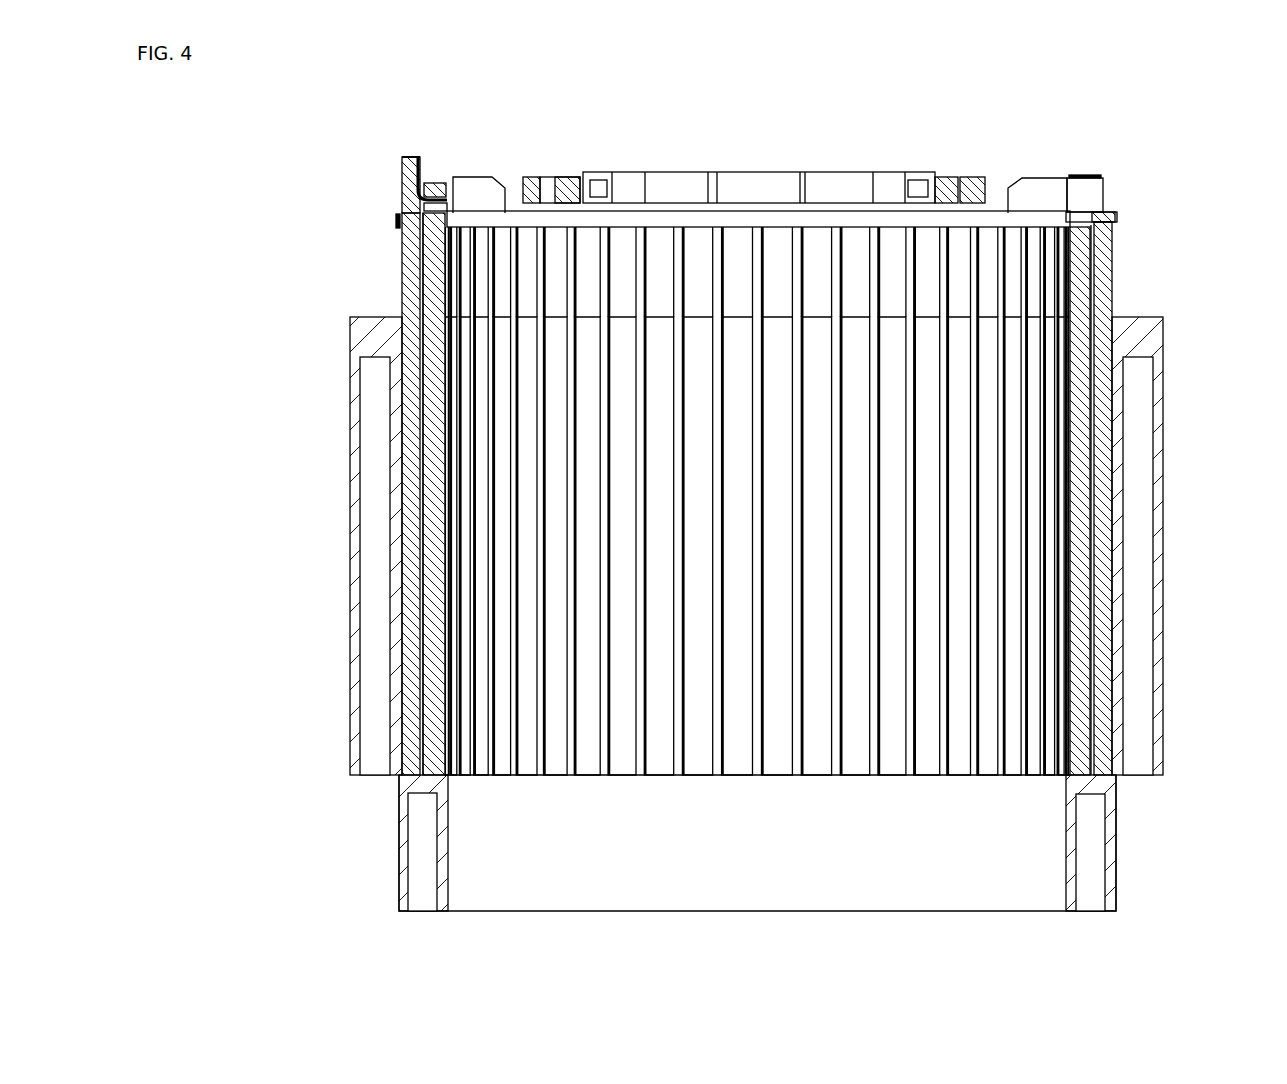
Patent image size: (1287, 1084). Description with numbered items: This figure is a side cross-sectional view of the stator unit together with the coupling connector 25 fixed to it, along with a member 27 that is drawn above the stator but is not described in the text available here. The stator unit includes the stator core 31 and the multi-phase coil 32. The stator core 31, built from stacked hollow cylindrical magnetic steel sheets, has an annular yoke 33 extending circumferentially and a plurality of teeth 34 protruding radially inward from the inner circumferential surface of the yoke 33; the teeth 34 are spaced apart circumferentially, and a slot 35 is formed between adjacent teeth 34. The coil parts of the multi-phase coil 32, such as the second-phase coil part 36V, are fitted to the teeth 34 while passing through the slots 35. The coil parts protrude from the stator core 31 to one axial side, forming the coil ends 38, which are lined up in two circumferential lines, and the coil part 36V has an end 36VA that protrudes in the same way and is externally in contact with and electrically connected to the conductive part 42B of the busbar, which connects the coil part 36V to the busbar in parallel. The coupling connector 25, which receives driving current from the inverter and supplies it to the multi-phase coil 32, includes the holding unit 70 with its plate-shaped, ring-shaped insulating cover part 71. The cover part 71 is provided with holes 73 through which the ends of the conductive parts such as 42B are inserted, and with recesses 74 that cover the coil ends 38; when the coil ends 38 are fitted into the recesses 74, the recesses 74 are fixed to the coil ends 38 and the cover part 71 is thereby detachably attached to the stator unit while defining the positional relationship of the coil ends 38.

The coupling connector 25 is at (1085, 176).
The lid member 27 is at (893, 172).
The stator core 31 is at (1165, 550).
The multi-phase coil 32 is at (1132, 300).
The yoke 33 is at (1165, 440).
The teeth 34 is at (817, 765).
The slot 35 is at (832, 792).
The coil part 36V is at (400, 177).
The end of coil part 36VA is at (407, 155).
The coil ends 38 is at (432, 288).
The conductive part 42B is at (418, 157).
The holding unit 70 is at (1103, 190).
The cover part 71 is at (1115, 218).
The holes 73 is at (408, 214).
The recesses 74 is at (433, 218).